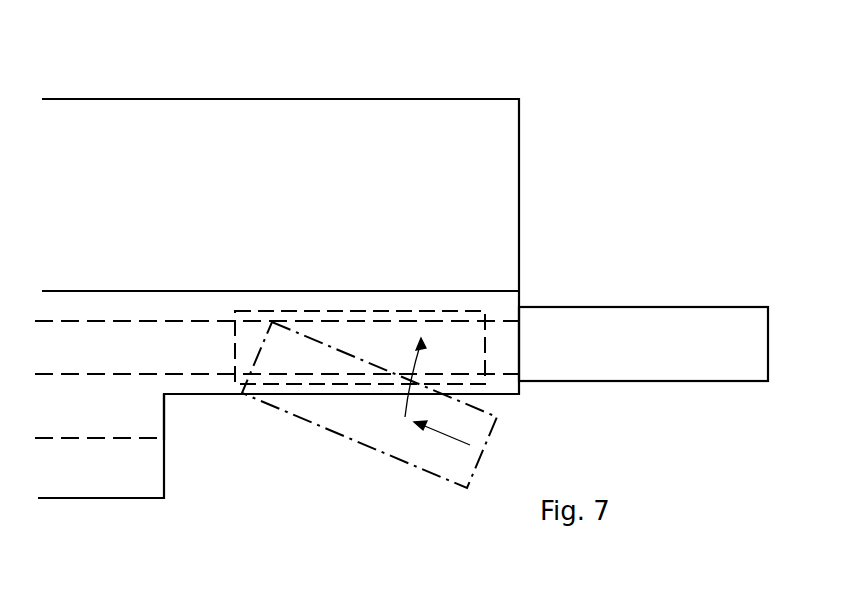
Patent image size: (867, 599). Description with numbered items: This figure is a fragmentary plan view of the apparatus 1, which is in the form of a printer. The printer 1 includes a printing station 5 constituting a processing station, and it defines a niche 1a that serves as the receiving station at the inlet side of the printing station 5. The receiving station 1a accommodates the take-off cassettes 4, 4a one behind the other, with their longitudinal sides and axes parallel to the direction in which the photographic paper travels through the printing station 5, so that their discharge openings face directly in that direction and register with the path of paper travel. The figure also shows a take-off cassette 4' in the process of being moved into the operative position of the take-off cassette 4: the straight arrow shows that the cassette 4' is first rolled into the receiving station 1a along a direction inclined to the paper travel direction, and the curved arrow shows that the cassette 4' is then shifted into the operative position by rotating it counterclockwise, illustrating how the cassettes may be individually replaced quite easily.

The apparatus 1 is at (137, 135).
The niche 1a is at (160, 403).
The printing station 5 is at (95, 307).
The take-off cassette 4 is at (360, 295).
The take-off cassette 4a is at (657, 322).
The take-off cassette 4' is at (369, 405).